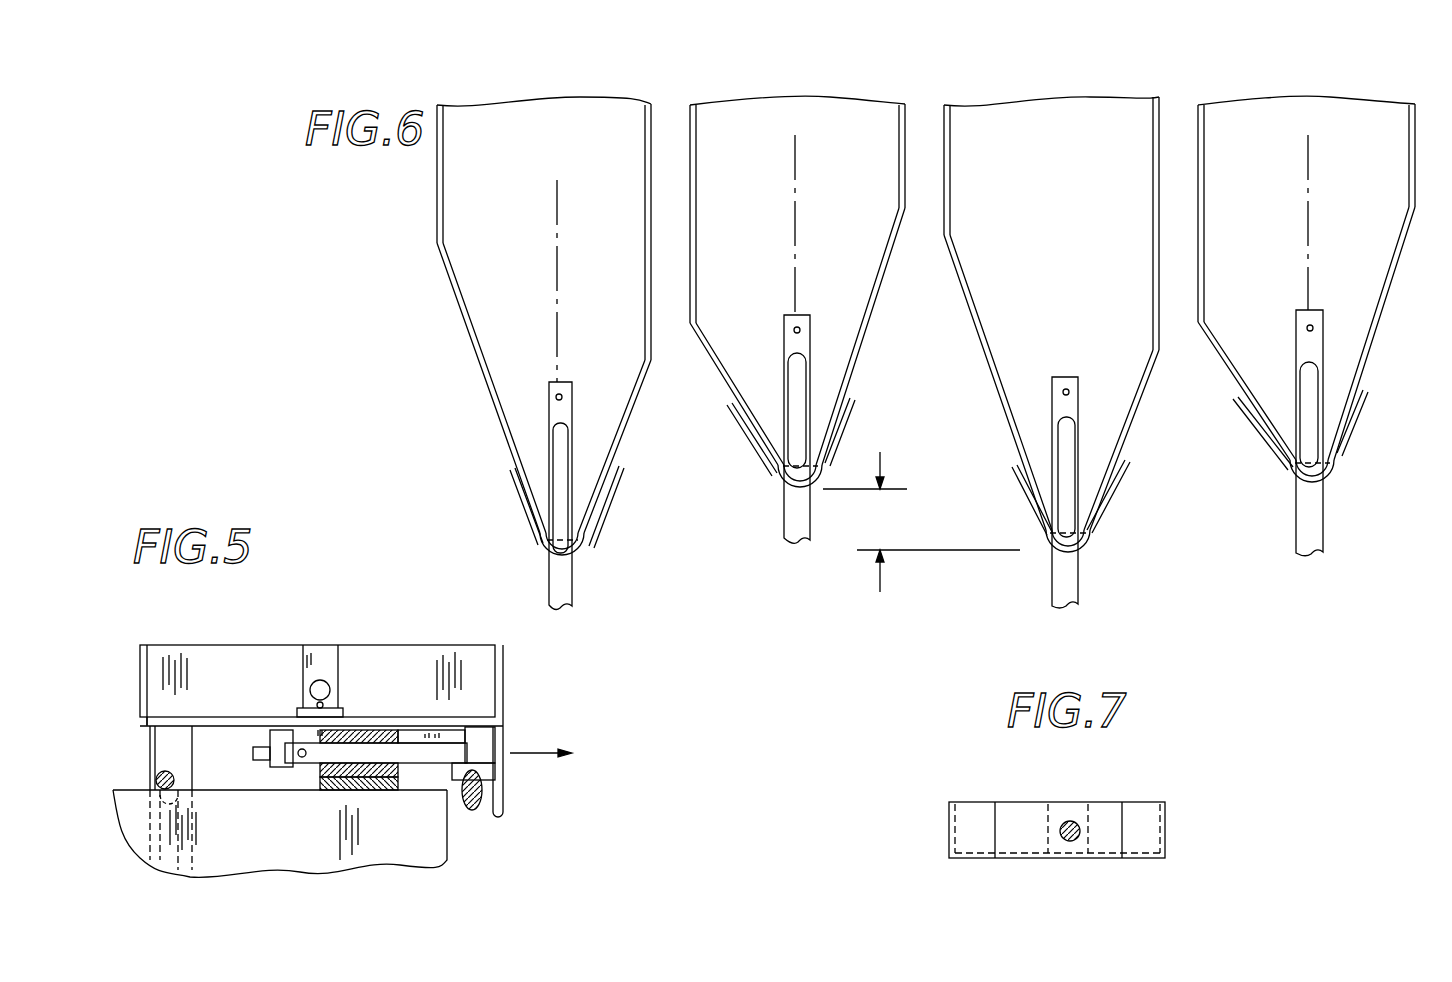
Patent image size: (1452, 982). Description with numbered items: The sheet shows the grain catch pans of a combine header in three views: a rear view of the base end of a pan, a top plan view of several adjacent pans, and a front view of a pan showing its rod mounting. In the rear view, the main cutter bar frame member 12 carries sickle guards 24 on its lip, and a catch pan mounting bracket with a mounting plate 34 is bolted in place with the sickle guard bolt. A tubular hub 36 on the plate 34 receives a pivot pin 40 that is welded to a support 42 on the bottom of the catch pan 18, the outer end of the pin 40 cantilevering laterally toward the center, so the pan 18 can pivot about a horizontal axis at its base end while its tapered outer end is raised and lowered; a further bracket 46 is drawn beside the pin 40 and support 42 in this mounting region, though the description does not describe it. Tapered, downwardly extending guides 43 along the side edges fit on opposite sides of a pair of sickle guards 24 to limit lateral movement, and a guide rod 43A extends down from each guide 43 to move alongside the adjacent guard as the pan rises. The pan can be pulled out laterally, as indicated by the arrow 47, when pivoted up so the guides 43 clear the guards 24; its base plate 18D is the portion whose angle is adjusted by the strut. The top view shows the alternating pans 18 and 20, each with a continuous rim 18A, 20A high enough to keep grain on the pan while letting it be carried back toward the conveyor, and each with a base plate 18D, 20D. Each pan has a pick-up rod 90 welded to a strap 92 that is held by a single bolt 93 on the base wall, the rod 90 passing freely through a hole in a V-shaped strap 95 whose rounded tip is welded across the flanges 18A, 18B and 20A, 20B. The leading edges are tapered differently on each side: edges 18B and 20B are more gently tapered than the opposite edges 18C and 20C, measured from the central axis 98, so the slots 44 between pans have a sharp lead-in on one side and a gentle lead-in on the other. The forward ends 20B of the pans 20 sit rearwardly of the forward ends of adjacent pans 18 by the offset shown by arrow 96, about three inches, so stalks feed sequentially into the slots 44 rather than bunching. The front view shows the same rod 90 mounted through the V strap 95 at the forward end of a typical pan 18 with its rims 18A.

In FIG. 5, the main cutter bar frame member 12 is at (395, 862).
In FIG. 6, the catch pan 18 is at (513, 383).
In FIG. 5, the catch pan 18 is at (270, 635).
In FIG. 7, the catch pan 18 is at (1078, 800).
In FIG. 6, the continuous rim 18A is at (645, 140).
In FIG. 5, the continuous rim 18A is at (160, 678).
In FIG. 7, the continuous rim 18A is at (965, 800).
In FIG. 6, the lead-in edge 18B is at (500, 430).
In FIG. 6, the lead-in edge 18C is at (620, 457).
In FIG. 6, the base plate 18D is at (473, 221).
In FIG. 5, the base plate 18D is at (205, 717).
In FIG. 6, the catch pan 20 is at (729, 393).
In FIG. 6, the continuous rim 20A is at (697, 187).
In FIG. 6, the lead-in edge 20B is at (857, 367).
In FIG. 6, the lead-in edge 20C is at (705, 350).
In FIG. 6, the base plate 20D is at (860, 258).
In FIG. 5, the sickle guard 24 is at (160, 777).
In FIG. 5, the mounting plate 34 is at (335, 787).
In FIG. 5, the tubular hub 36 is at (372, 740).
In FIG. 5, the pivot pin 40 is at (365, 755).
In FIG. 5, the support 42 is at (450, 735).
In FIG. 5, the guide 43 is at (503, 737).
In FIG. 5, the guide rod 43A is at (503, 800).
In FIG. 6, the slot 44 is at (928, 197).
In FIG. 5, the mounting bracket 46 is at (283, 760).
In FIG. 5, the arrow 47 is at (540, 752).
In FIG. 6, the pick-up rod 90 is at (573, 579).
In FIG. 7, the pick-up rod 90 is at (1078, 838).
In FIG. 6, the strap 92 is at (548, 400).
In FIG. 6, the bolt 93 is at (562, 394).
In FIG. 6, the strap 95 is at (521, 510).
In FIG. 5, the strap 95 is at (318, 662).
In FIG. 7, the strap 95 is at (1020, 840).
In FIG. 6, the arrow 96 is at (882, 462).
In FIG. 6, the central axis 98 is at (559, 303).